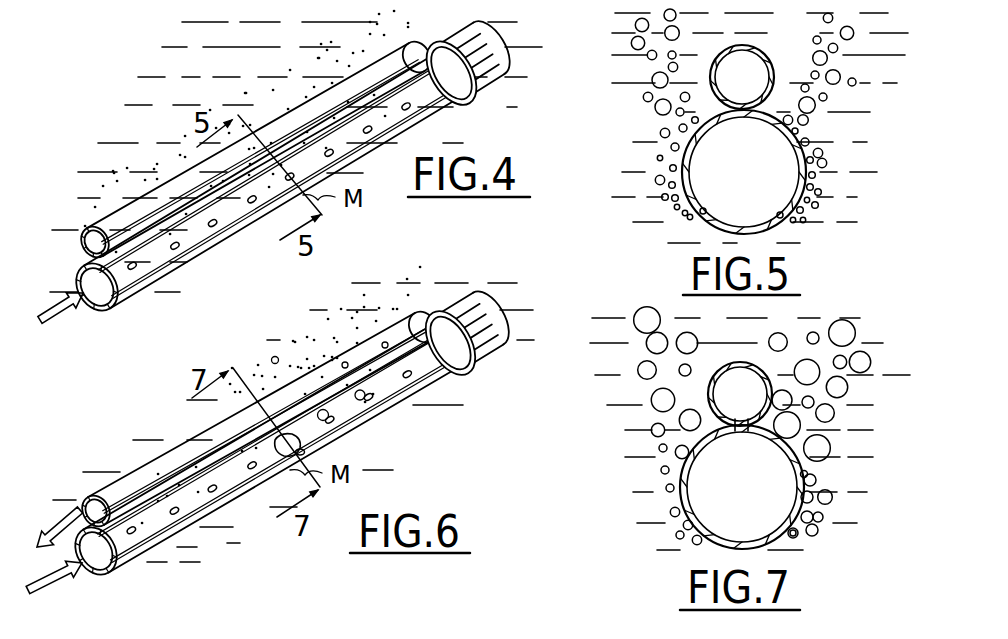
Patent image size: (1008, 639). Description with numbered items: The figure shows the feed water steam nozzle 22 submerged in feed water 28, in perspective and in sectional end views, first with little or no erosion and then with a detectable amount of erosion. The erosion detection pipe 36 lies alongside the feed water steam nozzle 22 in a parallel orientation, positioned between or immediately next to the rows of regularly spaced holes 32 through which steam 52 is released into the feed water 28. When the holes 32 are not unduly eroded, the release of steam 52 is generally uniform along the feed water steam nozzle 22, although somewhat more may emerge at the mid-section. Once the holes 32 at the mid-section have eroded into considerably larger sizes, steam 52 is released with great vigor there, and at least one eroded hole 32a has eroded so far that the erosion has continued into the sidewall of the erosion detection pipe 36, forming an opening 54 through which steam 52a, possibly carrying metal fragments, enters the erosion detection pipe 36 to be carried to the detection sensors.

In FIG. 4, the feed water steam nozzle 22 is at (130, 293).
In FIG. 6, the feed water steam nozzle 22 is at (200, 518).
In FIG. 5, the feed water steam nozzle 22 is at (777, 220).
In FIG. 7, the feed water steam nozzle 22 is at (680, 497).
In FIG. 4, the feed water 28 is at (153, 50).
In FIG. 6, the feed water 28 is at (507, 392).
In FIG. 5, the feed water 28 is at (637, 133).
In FIG. 7, the feed water 28 is at (915, 375).
In FIG. 4, the holes 32 is at (256, 211).
In FIG. 6, the holes 32 is at (206, 490).
In FIG. 5, the holes 32 is at (800, 131).
In FIG. 7, the holes 32 is at (796, 535).
In FIG. 6, the eroded hole 32a is at (304, 452).
In FIG. 7, the eroded hole 32a is at (808, 474).
In FIG. 4, the erosion detection pipe 36 is at (147, 197).
In FIG. 6, the erosion detection pipe 36 is at (192, 442).
In FIG. 5, the erosion detection pipe 36 is at (765, 55).
In FIG. 7, the erosion detection pipe 36 is at (748, 363).
In FIG. 4, the steam 52 is at (50, 325).
In FIG. 6, the steam 52 is at (48, 595).
In FIG. 6, the steam entering the erosion detection pipe 52a is at (55, 525).
In FIG. 6, the opening 54 is at (300, 440).
In FIG. 7, the opening 54 is at (748, 425).